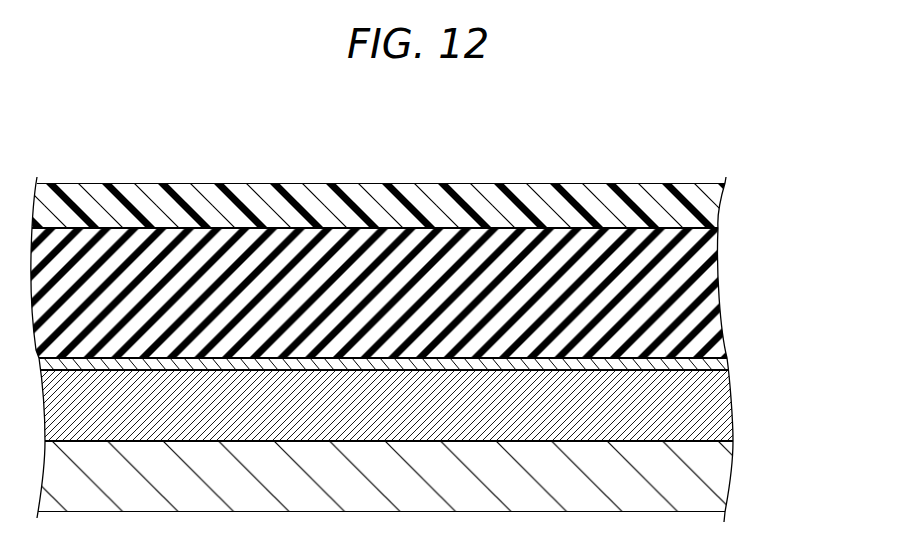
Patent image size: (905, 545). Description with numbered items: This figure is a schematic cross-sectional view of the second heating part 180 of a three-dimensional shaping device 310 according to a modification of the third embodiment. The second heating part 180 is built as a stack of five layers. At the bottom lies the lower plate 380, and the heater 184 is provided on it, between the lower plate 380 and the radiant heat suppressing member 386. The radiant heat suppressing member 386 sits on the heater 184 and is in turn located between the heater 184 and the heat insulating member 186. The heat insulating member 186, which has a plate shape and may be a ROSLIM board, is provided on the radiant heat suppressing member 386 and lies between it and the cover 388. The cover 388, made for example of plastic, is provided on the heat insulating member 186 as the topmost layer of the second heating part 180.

The three-dimensional shaping device 310 is at (738, 108).
The second heating part 180 is at (711, 166).
The cover 388 is at (690, 205).
The heat insulating member 186 is at (690, 288).
The radiant heat suppressing member 386 is at (728, 362).
The heater 184 is at (700, 406).
The lower plate 380 is at (697, 482).